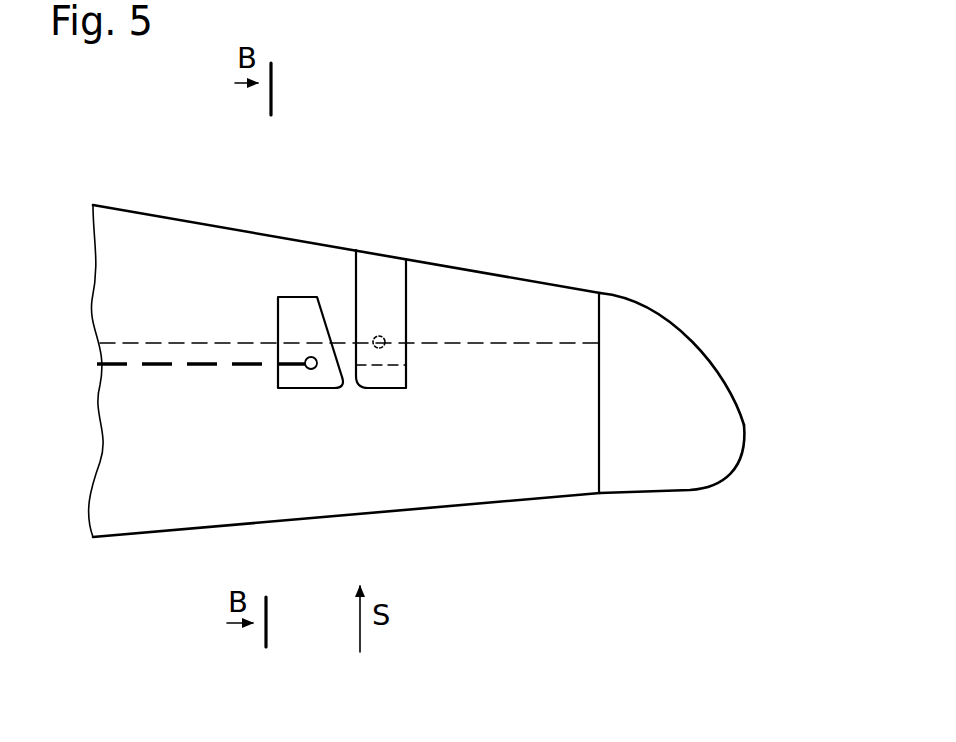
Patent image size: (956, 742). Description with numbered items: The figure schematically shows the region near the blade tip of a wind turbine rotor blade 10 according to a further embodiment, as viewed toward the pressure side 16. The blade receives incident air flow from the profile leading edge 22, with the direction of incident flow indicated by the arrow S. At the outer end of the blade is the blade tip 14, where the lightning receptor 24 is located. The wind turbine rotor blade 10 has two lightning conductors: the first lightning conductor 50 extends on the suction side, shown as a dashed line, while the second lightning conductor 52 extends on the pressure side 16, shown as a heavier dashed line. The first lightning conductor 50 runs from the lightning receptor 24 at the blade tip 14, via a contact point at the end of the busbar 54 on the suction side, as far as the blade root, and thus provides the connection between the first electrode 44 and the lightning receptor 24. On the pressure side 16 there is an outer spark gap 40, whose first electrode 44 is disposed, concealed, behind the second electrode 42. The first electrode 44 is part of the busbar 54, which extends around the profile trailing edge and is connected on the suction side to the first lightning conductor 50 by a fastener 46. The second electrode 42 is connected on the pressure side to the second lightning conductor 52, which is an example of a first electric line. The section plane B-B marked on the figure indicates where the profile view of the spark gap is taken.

The wind turbine rotor blade 10 is at (566, 545).
The blade tip 14 is at (733, 392).
The pressure side 16 is at (537, 320).
The profile leading edge 22 is at (122, 537).
The lightning receptor 24 is at (672, 378).
The outer spark gap 40 is at (333, 298).
The second electrode 42 is at (277, 292).
The first electrode 44 is at (392, 377).
The fastener 46 is at (385, 333).
The first lightning conductor 50 is at (165, 343).
The second lightning conductor 52 is at (205, 366).
The busbar 54 is at (390, 243).